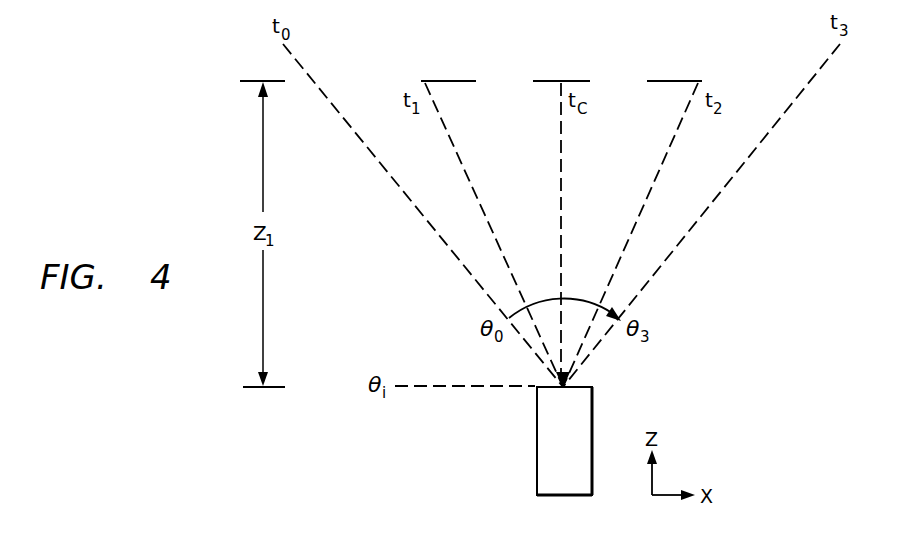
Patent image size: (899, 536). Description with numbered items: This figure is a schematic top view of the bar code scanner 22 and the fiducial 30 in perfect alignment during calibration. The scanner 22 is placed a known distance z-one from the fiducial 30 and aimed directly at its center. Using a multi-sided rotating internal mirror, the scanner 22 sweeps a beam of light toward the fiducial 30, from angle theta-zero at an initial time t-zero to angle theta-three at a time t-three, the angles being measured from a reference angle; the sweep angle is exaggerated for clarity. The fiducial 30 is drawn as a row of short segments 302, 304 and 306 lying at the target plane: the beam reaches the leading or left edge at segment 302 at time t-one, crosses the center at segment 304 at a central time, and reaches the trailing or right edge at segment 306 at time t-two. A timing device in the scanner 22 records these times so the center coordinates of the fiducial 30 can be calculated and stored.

The bar code scanner 22 is at (580, 452).
The fiducial 30 is at (564, 47).
The first transducer element 302 is at (447, 80).
The center transducer element 304 is at (545, 80).
The third transducer element 306 is at (672, 80).